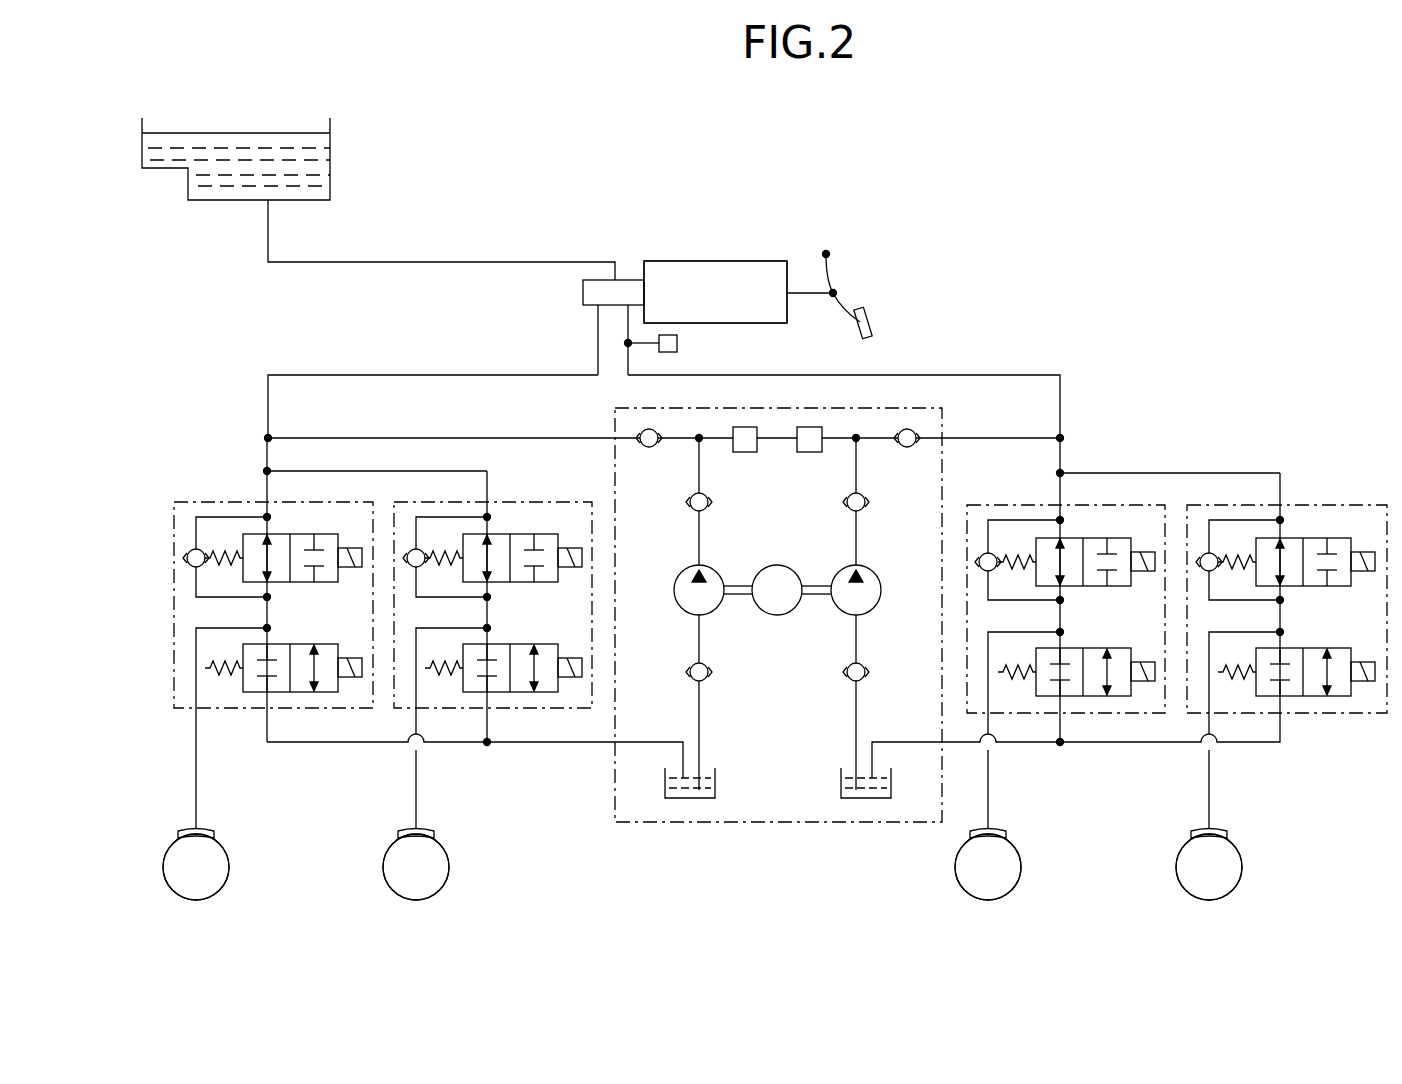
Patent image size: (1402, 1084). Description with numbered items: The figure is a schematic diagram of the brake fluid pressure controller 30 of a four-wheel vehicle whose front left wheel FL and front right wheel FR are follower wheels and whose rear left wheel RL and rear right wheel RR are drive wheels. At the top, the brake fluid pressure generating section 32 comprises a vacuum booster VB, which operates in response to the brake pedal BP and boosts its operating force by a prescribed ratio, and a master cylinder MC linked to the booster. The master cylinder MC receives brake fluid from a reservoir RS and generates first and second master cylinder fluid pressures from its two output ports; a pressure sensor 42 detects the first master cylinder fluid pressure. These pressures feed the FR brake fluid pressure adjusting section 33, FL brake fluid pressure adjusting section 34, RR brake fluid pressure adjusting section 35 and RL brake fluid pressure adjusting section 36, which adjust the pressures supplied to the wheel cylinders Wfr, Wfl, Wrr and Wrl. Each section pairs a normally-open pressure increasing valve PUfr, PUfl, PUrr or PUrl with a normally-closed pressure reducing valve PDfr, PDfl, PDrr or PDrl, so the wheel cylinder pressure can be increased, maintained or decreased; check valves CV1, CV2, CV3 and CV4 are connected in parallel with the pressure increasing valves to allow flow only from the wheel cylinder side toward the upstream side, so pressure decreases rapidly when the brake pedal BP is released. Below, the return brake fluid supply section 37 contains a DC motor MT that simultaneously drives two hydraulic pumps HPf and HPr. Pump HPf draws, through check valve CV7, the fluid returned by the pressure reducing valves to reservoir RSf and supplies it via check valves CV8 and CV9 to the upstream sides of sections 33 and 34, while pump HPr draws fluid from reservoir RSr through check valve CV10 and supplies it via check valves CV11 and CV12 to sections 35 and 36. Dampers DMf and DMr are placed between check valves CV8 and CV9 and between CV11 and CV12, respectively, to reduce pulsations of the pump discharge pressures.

The brake fluid pressure controller 30 is at (801, 168).
The brake fluid pressure generating section 32 is at (780, 258).
The FR brake fluid pressure adjusting section 33 is at (1201, 510).
The FL brake fluid pressure adjusting section 34 is at (980, 510).
The RR brake fluid pressure adjusting section 35 is at (410, 508).
The RL brake fluid pressure adjusting section 36 is at (193, 508).
The return brake fluid supply section 37 is at (778, 822).
The pressure sensor 42 is at (677, 348).
The reservoir RS is at (330, 158).
The master cylinder MC is at (583, 290).
The vacuum booster VB is at (715, 292).
The brake pedal BP is at (870, 318).
The pressure increasing valve PUrl is at (278, 532).
The pressure reducing valve PDrl is at (278, 642).
The check valve CV4 is at (193, 567).
The pressure increasing valve PUrr is at (498, 532).
The pressure reducing valve PDrr is at (498, 642).
The check valve CV3 is at (413, 567).
The pressure increasing valve PUfl is at (1071, 536).
The pressure reducing valve PDfl is at (1071, 646).
The check valve CV2 is at (985, 571).
The pressure increasing valve PUfr is at (1291, 536).
The pressure reducing valve PDfr is at (1291, 646).
The check valve CV1 is at (1206, 571).
The check valve CV12 is at (651, 447).
The check valve CV11 is at (706, 509).
The check valve CV10 is at (706, 679).
The check valve CV9 is at (907, 447).
The check valve CV8 is at (863, 509).
The check valve CV7 is at (863, 679).
The damper DMr is at (745, 452).
The damper DMf is at (810, 452).
The hydraulic pump HPr is at (714, 569).
The hydraulic pump HPf is at (882, 552).
The DC motor MT is at (777, 615).
The reservoir RSr is at (715, 790).
The reservoir RSf is at (841, 782).
The wheel cylinder Wrl is at (212, 832).
The wheel cylinder Wrr is at (432, 832).
The wheel cylinder Wfl is at (1004, 832).
The wheel cylinder Wfr is at (1225, 832).
The rear left wheel RL is at (196, 867).
The rear right wheel RR is at (416, 867).
The front left wheel FL is at (988, 867).
The front right wheel FR is at (1209, 867).